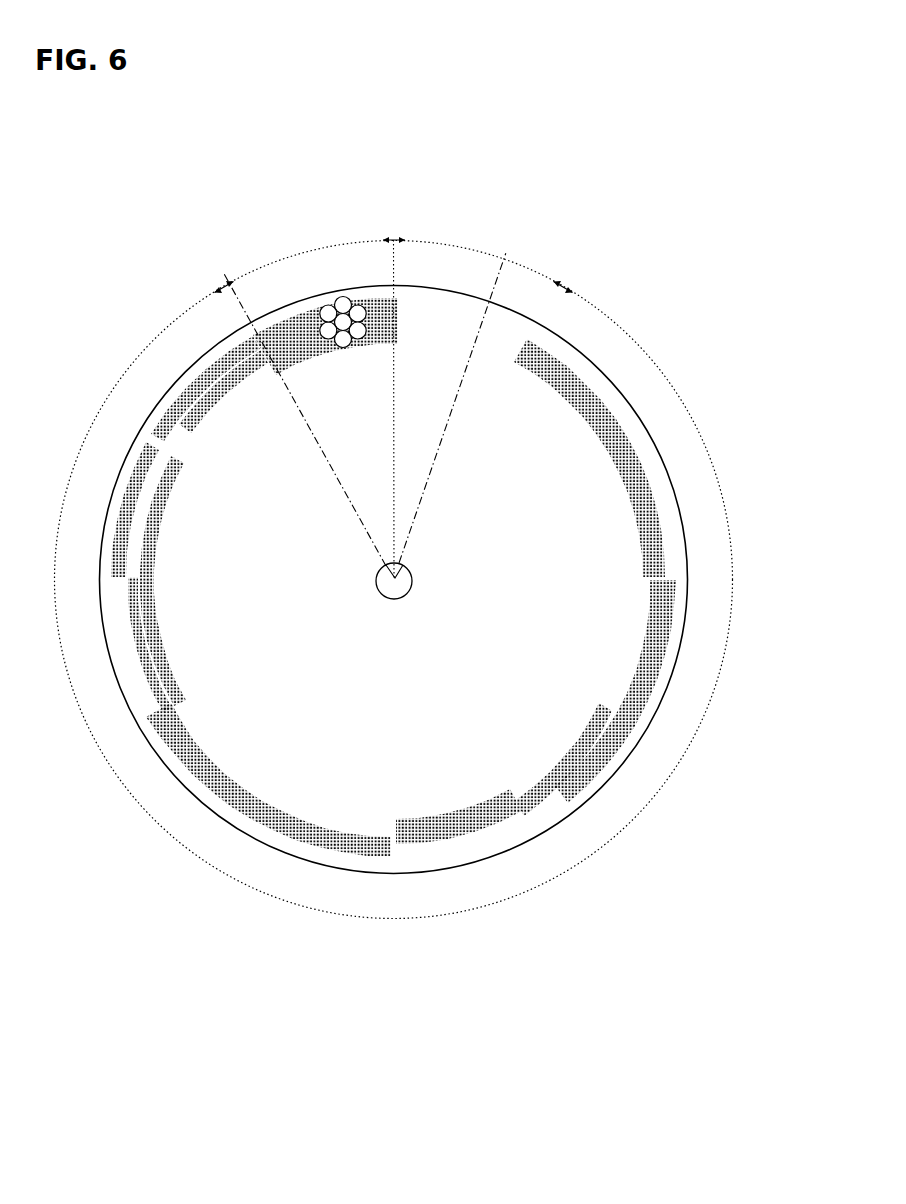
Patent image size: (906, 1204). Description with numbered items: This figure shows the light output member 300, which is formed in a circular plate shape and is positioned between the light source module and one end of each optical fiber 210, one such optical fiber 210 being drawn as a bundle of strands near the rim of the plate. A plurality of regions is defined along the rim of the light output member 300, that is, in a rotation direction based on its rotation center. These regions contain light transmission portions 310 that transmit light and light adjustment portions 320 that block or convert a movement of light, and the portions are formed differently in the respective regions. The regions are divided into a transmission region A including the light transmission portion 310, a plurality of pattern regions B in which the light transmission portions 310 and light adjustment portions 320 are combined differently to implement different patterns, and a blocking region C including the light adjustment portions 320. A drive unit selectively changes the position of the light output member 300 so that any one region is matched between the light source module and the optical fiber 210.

The optical fiber 210 is at (343, 298).
The light output member 300 is at (589, 340).
The light transmission portion 310 is at (515, 332).
The light adjustment portion 320 is at (293, 332).
The transmission region A is at (458, 250).
The pattern region B is at (484, 908).
The blocking region C is at (320, 250).